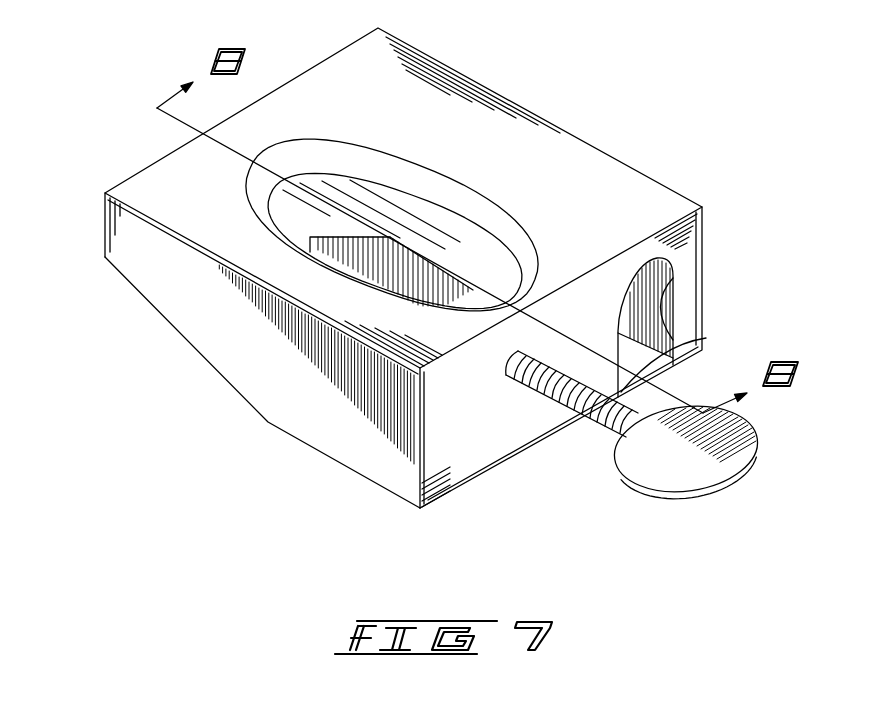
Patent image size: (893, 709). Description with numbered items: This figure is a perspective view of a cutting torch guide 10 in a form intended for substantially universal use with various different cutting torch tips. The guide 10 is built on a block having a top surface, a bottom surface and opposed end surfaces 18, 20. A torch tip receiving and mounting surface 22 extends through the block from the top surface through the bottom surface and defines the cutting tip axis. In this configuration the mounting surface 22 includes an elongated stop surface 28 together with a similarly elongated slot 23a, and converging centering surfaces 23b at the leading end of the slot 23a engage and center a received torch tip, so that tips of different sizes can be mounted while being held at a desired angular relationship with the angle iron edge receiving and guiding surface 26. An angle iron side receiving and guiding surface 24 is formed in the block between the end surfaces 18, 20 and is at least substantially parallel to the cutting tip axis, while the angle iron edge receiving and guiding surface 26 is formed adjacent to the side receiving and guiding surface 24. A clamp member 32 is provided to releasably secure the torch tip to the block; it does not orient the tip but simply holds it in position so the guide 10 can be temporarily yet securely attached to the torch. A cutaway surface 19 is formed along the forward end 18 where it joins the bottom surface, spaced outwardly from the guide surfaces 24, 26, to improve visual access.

The cutting torch guide 10 is at (646, 58).
The end surface 18 is at (104, 207).
The cutaway surface 19 is at (193, 343).
The end surface 20 is at (697, 240).
The torch tip receiving and mounting surface 22 is at (422, 159).
The slot 23a is at (440, 275).
The converging centering surfaces 23b is at (363, 262).
The angle iron side receiving and guiding surface 24 is at (619, 357).
The angle iron edge receiving and guiding surface 26 is at (620, 334).
The stop surface 28 is at (323, 160).
The clamp member 32 is at (675, 478).